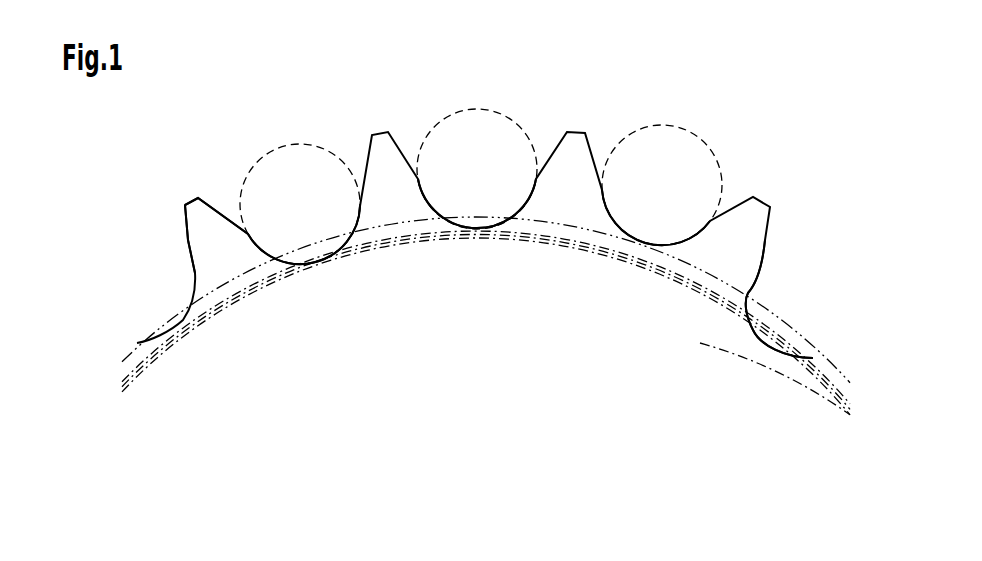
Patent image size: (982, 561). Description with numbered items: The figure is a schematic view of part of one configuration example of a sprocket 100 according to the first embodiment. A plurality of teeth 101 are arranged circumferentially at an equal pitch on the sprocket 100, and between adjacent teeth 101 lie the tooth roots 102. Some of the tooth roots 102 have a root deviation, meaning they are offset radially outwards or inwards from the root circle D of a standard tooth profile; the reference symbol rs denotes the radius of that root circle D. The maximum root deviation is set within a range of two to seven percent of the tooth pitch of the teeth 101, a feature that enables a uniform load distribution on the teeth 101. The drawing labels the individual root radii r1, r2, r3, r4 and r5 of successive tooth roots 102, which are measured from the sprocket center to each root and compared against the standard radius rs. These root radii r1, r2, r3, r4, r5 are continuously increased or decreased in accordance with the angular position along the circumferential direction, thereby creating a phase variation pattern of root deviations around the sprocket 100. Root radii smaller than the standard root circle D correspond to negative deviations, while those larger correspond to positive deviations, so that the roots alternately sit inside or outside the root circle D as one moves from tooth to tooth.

The sprocket 100 is at (582, 126).
The teeth 101 is at (199, 197).
The tooth roots 102 is at (183, 320).
The root circle D is at (122, 394).
The root radius r1 is at (175, 330).
The root radius r2 is at (324, 269).
The root radius r3 is at (477, 234).
The root radius r4 is at (639, 251).
The root radius r5 is at (766, 347).
The radius of the root circle rs is at (850, 421).